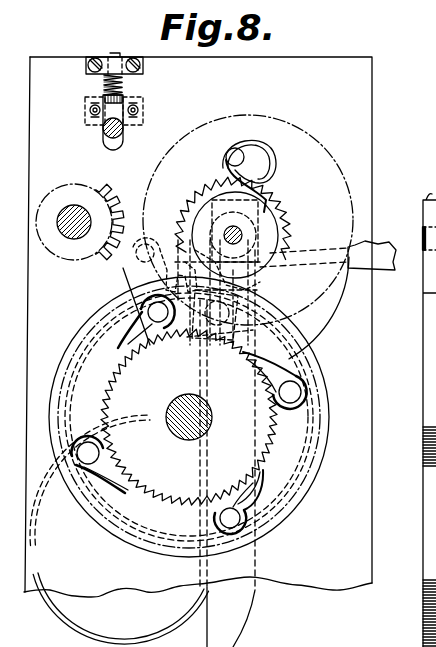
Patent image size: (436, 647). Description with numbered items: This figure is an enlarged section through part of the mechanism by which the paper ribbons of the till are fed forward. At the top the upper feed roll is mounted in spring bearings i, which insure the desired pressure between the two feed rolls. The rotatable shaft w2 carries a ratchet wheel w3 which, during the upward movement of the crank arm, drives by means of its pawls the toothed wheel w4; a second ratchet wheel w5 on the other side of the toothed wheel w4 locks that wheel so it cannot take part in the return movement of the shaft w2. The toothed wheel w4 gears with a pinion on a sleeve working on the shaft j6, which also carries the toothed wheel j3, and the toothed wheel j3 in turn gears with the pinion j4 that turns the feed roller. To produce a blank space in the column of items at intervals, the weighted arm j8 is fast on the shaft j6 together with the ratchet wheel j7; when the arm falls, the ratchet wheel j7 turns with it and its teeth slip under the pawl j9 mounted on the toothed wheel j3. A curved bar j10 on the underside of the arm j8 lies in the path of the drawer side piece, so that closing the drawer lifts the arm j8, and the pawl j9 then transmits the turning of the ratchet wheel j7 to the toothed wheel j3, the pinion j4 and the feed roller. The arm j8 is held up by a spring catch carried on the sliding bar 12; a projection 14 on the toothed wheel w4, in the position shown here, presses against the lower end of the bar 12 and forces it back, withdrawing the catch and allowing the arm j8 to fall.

The spring bearings i is at (125, 88).
The toothed wheel j3 is at (128, 188).
The pinion j4 is at (88, 184).
The shaft j6 is at (240, 232).
The ratchet wheel j7 is at (270, 227).
The weighted arm j8 is at (242, 620).
The pawl j9 is at (255, 172).
The curved bar j10 is at (82, 628).
The bar 12 is at (383, 248).
The projection 14 is at (287, 316).
The shaft w2 is at (210, 418).
The ratchet wheel w3 is at (176, 500).
The toothed wheel w4 is at (305, 500).
The ratchet wheel w5 is at (307, 335).